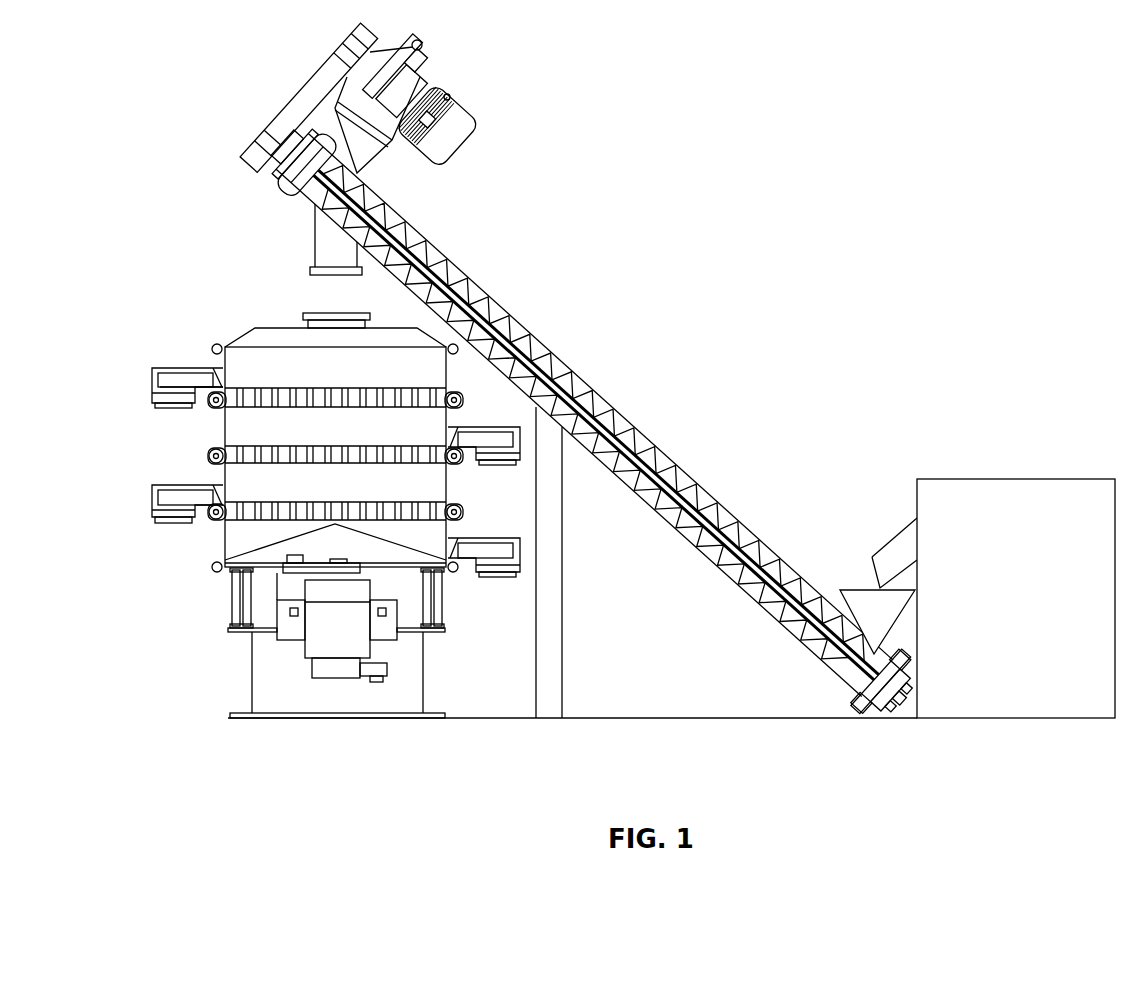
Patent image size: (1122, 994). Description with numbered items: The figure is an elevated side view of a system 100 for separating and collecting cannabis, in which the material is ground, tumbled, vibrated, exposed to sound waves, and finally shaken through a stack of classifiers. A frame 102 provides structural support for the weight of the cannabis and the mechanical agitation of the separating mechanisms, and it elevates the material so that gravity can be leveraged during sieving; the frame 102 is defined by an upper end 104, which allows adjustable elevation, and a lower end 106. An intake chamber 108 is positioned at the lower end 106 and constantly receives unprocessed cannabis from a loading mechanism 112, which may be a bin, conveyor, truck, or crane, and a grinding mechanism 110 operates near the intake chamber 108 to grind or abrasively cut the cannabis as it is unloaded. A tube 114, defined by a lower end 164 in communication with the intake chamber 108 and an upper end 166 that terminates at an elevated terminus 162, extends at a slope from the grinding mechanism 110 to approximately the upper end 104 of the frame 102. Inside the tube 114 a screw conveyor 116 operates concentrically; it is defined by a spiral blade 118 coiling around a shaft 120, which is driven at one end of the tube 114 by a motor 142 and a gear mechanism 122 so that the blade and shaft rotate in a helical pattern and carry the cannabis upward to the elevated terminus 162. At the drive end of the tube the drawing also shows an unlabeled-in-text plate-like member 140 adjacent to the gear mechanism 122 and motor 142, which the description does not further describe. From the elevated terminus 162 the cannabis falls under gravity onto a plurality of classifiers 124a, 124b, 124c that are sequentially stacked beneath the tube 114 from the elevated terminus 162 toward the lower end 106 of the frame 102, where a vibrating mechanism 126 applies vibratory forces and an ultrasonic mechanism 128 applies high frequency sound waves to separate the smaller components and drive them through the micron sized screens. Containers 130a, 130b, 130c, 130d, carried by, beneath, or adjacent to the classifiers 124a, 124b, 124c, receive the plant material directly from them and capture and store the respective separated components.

The system 100 is at (965, 147).
The frame 102 is at (552, 612).
The upper end 104 is at (536, 412).
The lower end 106 is at (536, 707).
The intake chamber 108 is at (860, 588).
The grinding mechanism 110 is at (894, 693).
The loading mechanism 112 is at (1050, 478).
The tube 114 is at (610, 384).
The screw conveyor 116 is at (585, 415).
The spiral blade 118 is at (591, 420).
The shaft 120 is at (596, 425).
The gear mechanism 122 is at (299, 158).
The classifier 124a is at (267, 385).
The classifier 124b is at (216, 456).
The classifier 124c is at (217, 518).
The vibrating mechanism 126 is at (373, 663).
The ultrasonic mechanism 128 is at (295, 613).
The container 130a is at (162, 410).
The container 130b is at (162, 523).
The container 130c is at (488, 466).
The container 130d is at (489, 578).
The discharge chute plate 140 is at (309, 97).
The motor 142 is at (426, 101).
The elevated terminus 162 is at (317, 256).
The lower end 164 is at (880, 681).
The upper end 166 is at (360, 170).